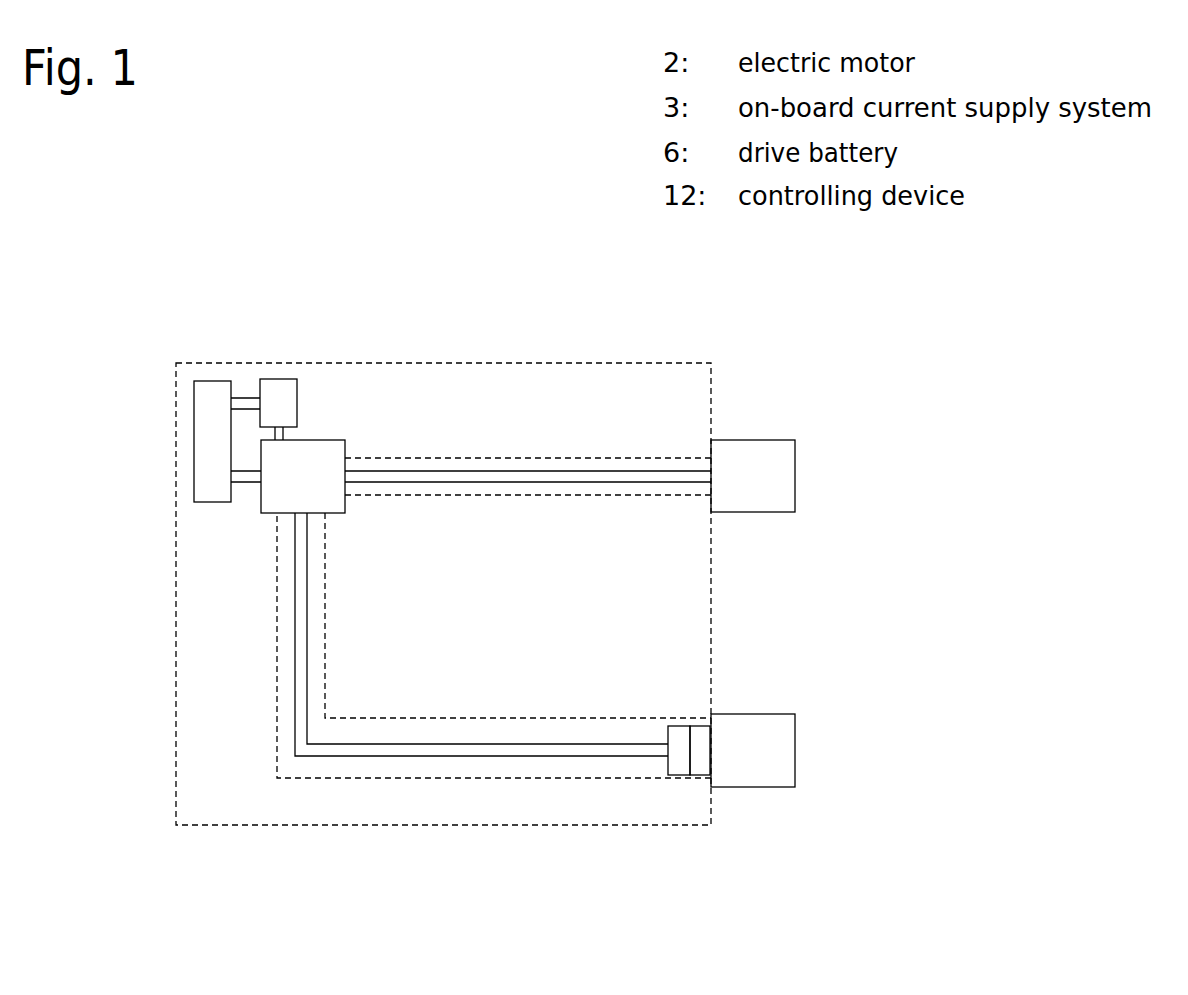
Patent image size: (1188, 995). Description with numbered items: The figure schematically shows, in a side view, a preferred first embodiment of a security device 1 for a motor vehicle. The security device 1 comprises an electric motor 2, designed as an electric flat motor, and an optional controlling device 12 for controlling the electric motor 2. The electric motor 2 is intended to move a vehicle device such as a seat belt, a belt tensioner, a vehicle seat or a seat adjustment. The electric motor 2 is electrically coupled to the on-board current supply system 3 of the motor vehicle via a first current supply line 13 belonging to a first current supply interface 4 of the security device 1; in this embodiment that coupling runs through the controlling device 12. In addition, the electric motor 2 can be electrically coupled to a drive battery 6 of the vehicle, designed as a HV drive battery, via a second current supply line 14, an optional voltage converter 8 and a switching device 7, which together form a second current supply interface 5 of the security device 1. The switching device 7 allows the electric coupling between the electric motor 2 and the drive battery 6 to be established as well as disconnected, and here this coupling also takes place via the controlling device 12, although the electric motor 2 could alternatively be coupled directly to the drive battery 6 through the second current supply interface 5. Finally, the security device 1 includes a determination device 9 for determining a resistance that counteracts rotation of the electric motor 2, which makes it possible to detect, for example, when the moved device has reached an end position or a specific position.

The security device 1 is at (540, 365).
The electric motor 2 is at (210, 446).
The on-board current supply system 3 is at (777, 472).
The first current supply interface 4 is at (502, 458).
The second current supply interface 5 is at (510, 779).
The drive battery 6 is at (777, 748).
The switching device 7 is at (698, 760).
The voltage converter 8 is at (677, 762).
The determination device 9 is at (276, 403).
The controlling device 12 is at (318, 457).
The first current supply line 13 is at (607, 475).
The second current supply line 14 is at (394, 749).